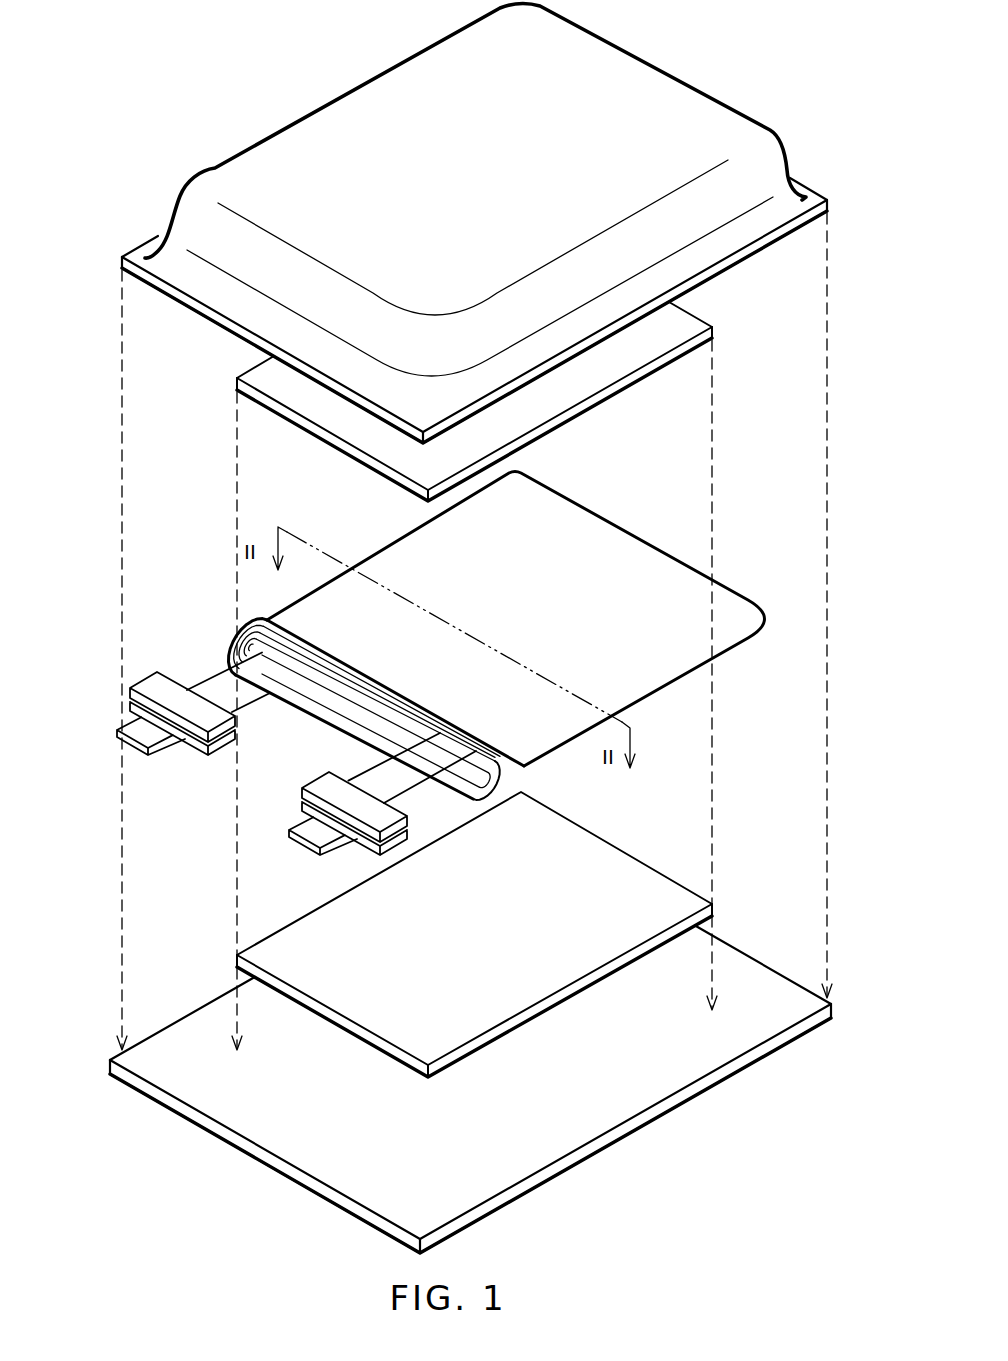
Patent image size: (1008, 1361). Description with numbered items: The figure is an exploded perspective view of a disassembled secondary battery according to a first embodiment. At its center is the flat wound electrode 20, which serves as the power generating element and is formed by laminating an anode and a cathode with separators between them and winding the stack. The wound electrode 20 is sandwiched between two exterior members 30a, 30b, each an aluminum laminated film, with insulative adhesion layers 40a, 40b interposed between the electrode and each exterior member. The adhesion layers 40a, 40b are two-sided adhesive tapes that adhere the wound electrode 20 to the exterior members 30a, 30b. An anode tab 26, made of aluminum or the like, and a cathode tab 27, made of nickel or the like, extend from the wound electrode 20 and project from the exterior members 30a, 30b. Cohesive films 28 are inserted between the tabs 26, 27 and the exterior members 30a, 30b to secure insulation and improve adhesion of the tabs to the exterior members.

The wound electrode 20 is at (570, 532).
The anode tab 26 is at (135, 727).
The cathode tab 27 is at (303, 827).
The cohesive film 28 is at (212, 722).
The exterior member 30a is at (632, 80).
The exterior member 30b is at (710, 1047).
The adhesion layer 40a is at (643, 352).
The adhesion layer 40b is at (620, 888).